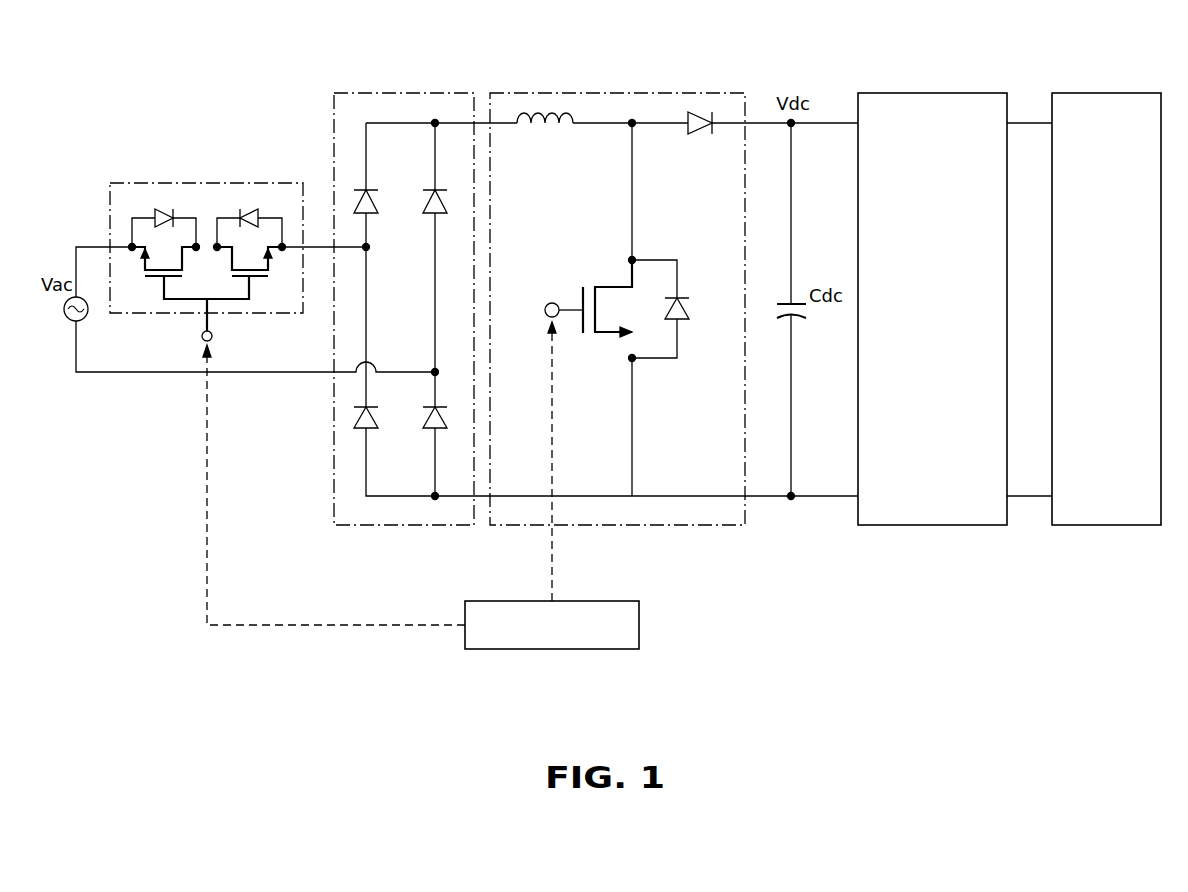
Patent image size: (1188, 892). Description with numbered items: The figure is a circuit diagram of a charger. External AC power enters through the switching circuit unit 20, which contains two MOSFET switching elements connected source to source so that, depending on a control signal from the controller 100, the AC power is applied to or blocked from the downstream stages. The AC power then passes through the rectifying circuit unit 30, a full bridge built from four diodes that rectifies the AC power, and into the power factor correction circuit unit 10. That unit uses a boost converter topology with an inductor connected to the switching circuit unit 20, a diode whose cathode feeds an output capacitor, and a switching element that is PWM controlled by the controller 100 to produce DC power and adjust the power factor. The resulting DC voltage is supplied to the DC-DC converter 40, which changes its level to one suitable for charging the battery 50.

The power factor correction circuit unit 10 is at (611, 93).
The switching circuit unit 20 is at (207, 183).
The rectifying circuit unit 30 is at (418, 93).
The DC-DC converter 40 is at (914, 93).
The battery 50 is at (1113, 93).
The controller 100 is at (641, 625).